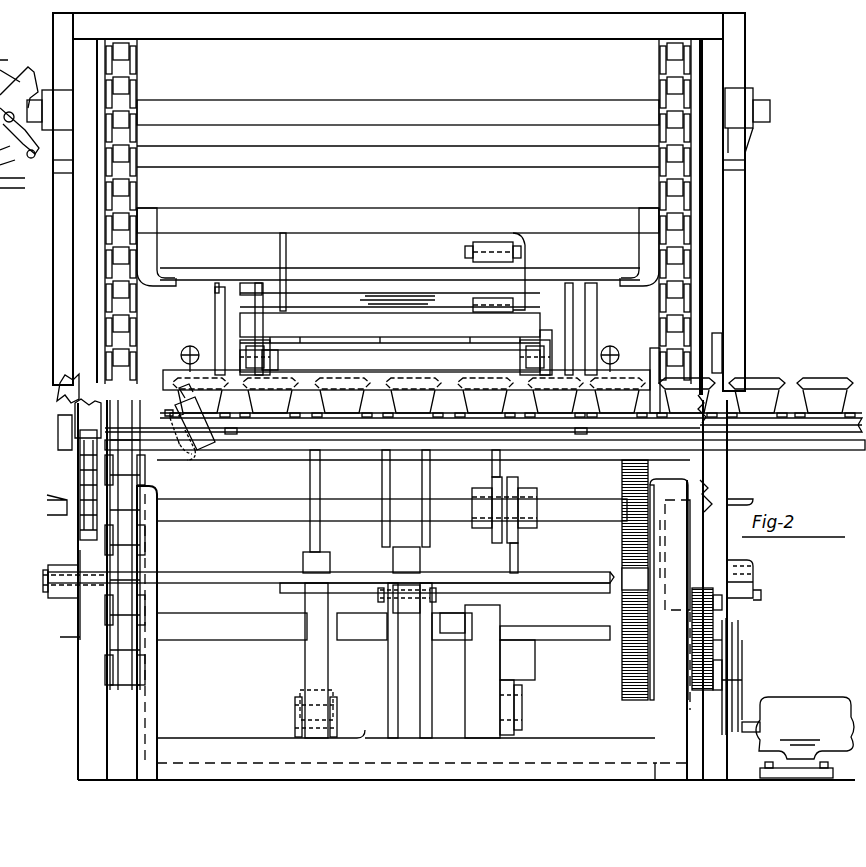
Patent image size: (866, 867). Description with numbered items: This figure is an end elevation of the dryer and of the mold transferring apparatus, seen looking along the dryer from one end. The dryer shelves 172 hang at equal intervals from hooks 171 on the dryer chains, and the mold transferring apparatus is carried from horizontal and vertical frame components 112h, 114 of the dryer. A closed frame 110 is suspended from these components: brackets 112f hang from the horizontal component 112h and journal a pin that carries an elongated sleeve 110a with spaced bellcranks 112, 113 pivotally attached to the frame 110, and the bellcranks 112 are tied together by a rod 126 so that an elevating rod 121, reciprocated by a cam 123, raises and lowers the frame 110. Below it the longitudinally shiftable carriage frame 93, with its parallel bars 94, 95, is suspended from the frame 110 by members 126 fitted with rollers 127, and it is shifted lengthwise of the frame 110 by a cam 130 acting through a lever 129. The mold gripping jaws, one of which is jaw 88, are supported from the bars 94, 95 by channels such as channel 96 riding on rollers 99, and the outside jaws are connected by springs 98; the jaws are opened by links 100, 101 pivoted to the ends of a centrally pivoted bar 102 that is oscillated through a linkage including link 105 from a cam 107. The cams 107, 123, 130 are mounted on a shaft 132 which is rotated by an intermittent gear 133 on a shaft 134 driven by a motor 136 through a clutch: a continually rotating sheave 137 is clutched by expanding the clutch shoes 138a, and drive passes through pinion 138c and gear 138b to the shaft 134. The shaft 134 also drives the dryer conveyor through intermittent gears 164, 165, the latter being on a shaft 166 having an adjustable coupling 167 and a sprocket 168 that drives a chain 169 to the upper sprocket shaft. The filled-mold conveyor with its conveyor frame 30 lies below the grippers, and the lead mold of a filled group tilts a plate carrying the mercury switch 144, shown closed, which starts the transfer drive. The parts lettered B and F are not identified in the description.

The parallel bar 95 is at (540, 340).
The link 101 is at (230, 432).
The frame post B is at (738, 33).
The horizontal frame component 112h is at (437, 215).
The dryer shelf 172 is at (191, 272).
The hook 171 is at (640, 251).
The bracket 112f is at (280, 256).
The bellcrank 112 is at (475, 287).
The bellcrank 113 is at (390, 289).
The elongated sleeve 110a is at (393, 292).
The closed frame 110 is at (390, 325).
The frame 93 is at (390, 354).
The vertical frame component 114 is at (191, 331).
The roller 127 is at (256, 288).
The suspension member 126 is at (249, 335).
The link 100 is at (215, 327).
The centrally pivoted bar 102 is at (570, 337).
The parallel bar 94 is at (258, 340).
The roller 99 is at (270, 357).
The channel 96 is at (530, 357).
The spring 98 is at (196, 352).
The mold gripping jaw 88 is at (642, 372).
The flower pots F is at (758, 367).
The conveyor frame 30 is at (808, 418).
The mercury switch 144 is at (186, 450).
The chain 169 is at (80, 480).
The sprocket 168 is at (85, 520).
The shaft 166 is at (548, 498).
The link 105 is at (314, 466).
The lever 129 is at (420, 464).
The elevating rod 121 is at (496, 458).
The adjustable coupling 167 is at (480, 524).
The intermittent gear 165 is at (620, 481).
The intermittent gear 164 is at (640, 704).
The shaft 132 is at (230, 603).
The cam 123 is at (508, 588).
The cam 107 is at (324, 657).
The cam 130 is at (418, 662).
The shaft 134 is at (542, 630).
The intermittent gear 133 is at (576, 692).
The gear 138b is at (712, 622).
The sheave 137 is at (735, 639).
The clutch shoe 138a is at (720, 673).
The pinion 138c is at (715, 690).
The motor 136 is at (822, 706).